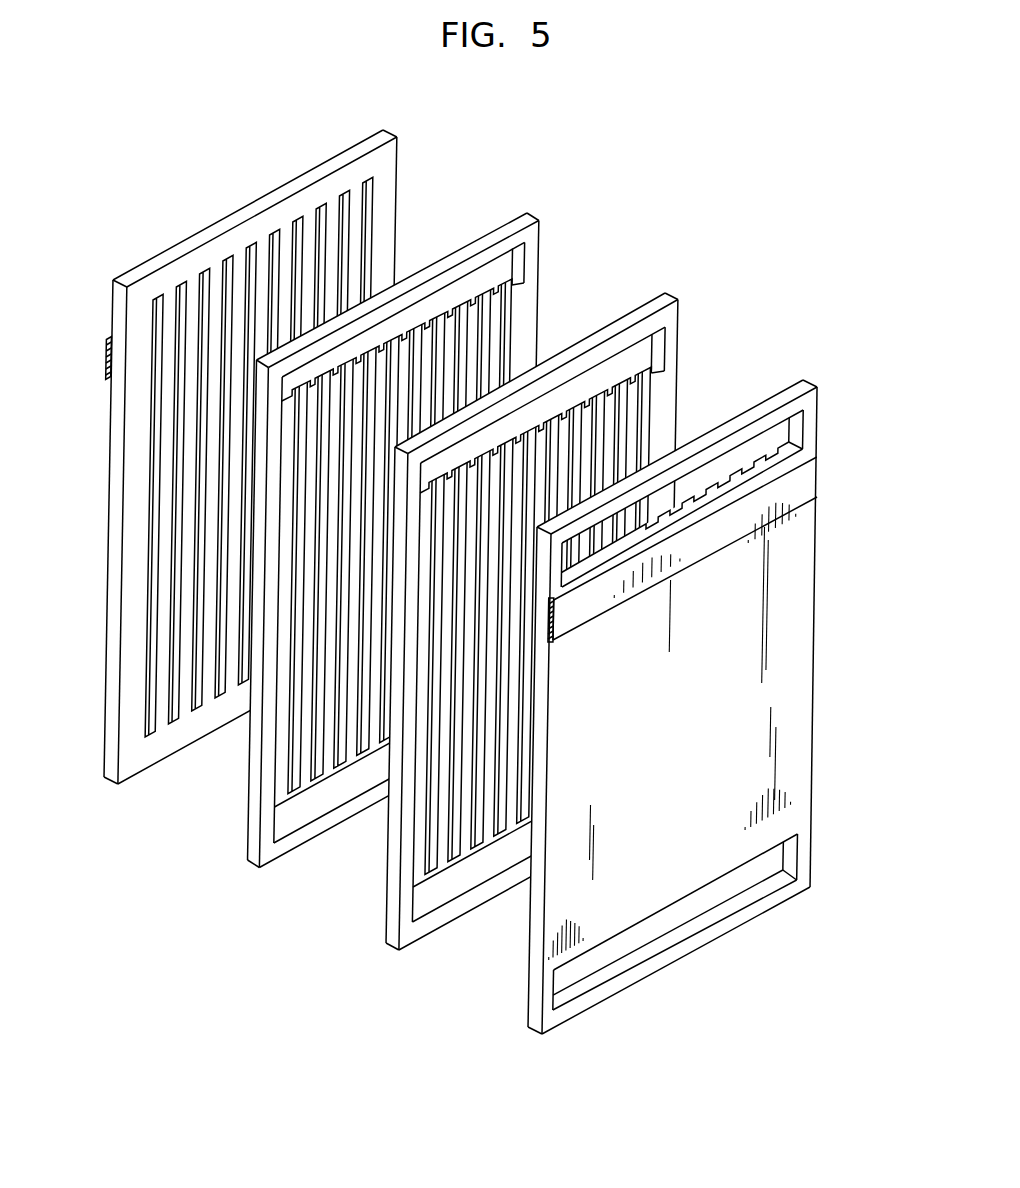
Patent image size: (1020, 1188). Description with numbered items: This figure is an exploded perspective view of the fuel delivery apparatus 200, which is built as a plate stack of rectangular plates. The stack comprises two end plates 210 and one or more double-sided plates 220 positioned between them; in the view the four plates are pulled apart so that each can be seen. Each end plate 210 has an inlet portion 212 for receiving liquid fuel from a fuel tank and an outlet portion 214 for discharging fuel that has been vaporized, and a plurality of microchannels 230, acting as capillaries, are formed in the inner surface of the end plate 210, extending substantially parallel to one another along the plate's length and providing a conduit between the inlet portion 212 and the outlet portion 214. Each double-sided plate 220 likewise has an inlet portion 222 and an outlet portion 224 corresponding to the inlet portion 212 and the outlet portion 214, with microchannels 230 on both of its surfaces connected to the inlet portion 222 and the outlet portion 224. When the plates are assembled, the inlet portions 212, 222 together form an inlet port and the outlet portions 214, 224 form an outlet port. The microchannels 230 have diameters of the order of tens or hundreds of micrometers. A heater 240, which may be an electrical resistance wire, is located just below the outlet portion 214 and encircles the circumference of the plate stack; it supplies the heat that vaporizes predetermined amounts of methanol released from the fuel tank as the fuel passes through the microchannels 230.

The fuel delivery apparatus 200 is at (292, 138).
The end plate 210 is at (124, 763).
The inlet portion 212 is at (617, 960).
The outlet portion 214 is at (783, 435).
The double-sided plate 220 is at (404, 915).
The inlet portion 222 is at (441, 892).
The outlet portion 224 is at (649, 352).
The microchannels 230 is at (367, 207).
The heater 240 is at (113, 353).